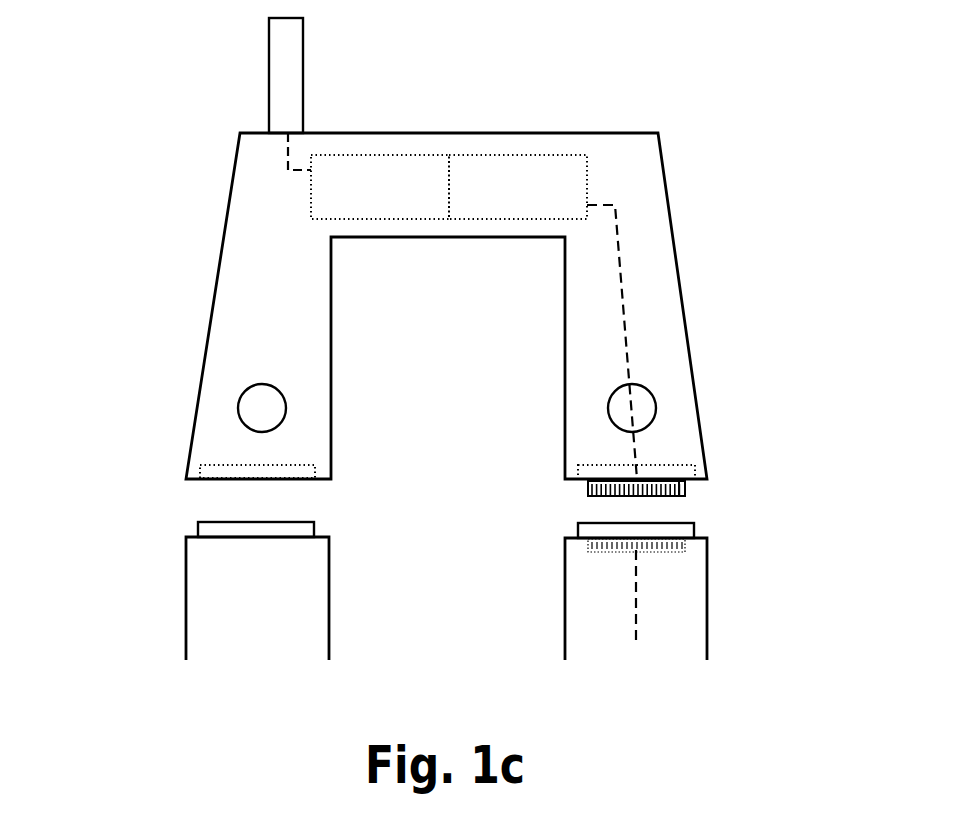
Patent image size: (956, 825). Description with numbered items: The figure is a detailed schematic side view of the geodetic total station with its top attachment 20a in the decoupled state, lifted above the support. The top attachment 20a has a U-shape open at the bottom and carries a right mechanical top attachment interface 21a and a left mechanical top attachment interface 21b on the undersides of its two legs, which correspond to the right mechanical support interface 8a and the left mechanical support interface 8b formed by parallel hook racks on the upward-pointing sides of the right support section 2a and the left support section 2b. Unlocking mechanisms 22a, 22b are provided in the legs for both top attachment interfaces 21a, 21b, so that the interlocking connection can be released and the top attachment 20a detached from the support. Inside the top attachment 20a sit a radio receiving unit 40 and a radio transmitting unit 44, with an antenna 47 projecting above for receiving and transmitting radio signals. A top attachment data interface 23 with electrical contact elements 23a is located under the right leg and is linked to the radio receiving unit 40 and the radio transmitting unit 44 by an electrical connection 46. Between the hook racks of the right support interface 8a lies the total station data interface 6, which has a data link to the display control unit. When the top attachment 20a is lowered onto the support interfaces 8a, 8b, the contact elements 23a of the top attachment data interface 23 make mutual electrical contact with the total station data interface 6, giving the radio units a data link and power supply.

The top attachment 20a is at (718, 78).
The antenna 47 is at (286, 102).
The radio receiving unit 40 is at (340, 192).
The radio transmitting unit 44 is at (526, 194).
The electrical connection 46 is at (621, 267).
The unlocking mechanism 22b is at (253, 406).
The unlocking mechanism 22a is at (643, 407).
The left mechanical top attachment interface 21b is at (223, 466).
The right mechanical top attachment interface 21a is at (671, 467).
The top attachment data interface 23 is at (669, 487).
The electrical contact elements 23a is at (684, 493).
The left mechanical support interface 8b is at (218, 529).
The right mechanical support interface 8a is at (671, 531).
The total station data interface 6 is at (671, 546).
The left support section 2b is at (217, 639).
The right support section 2a is at (675, 628).